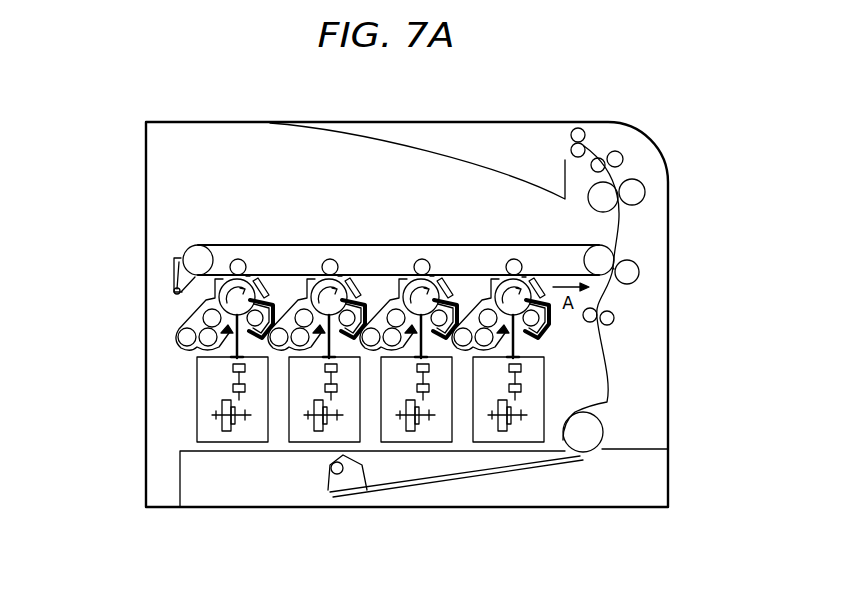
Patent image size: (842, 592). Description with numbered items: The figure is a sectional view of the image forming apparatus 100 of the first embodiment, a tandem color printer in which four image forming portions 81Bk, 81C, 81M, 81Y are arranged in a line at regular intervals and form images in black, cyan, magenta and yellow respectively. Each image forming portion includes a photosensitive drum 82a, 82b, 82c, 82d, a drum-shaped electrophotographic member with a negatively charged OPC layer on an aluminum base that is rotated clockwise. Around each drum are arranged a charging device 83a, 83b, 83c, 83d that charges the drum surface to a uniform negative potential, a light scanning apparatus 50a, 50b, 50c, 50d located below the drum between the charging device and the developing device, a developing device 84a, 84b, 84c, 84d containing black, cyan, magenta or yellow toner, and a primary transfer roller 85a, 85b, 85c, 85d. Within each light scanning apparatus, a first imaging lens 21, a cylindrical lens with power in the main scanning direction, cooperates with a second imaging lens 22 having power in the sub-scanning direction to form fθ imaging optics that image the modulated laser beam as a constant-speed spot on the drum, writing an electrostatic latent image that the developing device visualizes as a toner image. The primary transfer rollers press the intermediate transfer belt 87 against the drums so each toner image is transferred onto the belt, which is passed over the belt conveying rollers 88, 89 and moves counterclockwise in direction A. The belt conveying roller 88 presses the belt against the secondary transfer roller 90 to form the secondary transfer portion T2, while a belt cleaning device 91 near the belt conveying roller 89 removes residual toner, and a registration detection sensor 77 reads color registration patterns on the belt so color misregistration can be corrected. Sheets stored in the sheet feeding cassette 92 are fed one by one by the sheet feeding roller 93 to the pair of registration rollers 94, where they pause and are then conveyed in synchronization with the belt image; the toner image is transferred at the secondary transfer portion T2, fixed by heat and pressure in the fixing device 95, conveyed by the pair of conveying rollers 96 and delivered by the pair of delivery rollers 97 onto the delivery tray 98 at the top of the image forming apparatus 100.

The image forming apparatus 100 is at (146, 182).
The intermediate transfer belt 87 is at (217, 246).
The belt conveying roller 89 is at (190, 248).
The belt cleaning device 91 is at (173, 272).
The belt conveying roller 88 is at (610, 250).
The secondary transfer roller 90 is at (640, 273).
The secondary transfer portion T2 is at (658, 280).
The delivery tray 98 is at (522, 180).
The registration detection sensor 77 is at (567, 236).
The pair of delivery rollers 97 is at (577, 128).
The pair of conveying rollers 96 is at (622, 152).
The fixing device 95 is at (643, 184).
The pair of registration rollers 94 is at (612, 320).
The sheet feeding roller 93 is at (610, 406).
The sheet feeding cassette 92 is at (612, 488).
The image forming portion 81Y is at (200, 303).
The image forming portion 81M is at (307, 279).
The image forming portion 81C is at (399, 279).
The image forming portion 81Bk is at (491, 279).
The photosensitive drum 82a is at (490, 287).
The photosensitive drum 82b is at (398, 287).
The photosensitive drum 82c is at (306, 287).
The photosensitive drum 82d is at (214, 287).
The charging device 83a is at (538, 328).
The charging device 83b is at (441, 283).
The charging device 83c is at (349, 283).
The charging device 83d is at (257, 283).
The developing device 84a is at (476, 310).
The developing device 84b is at (385, 310).
The developing device 84c is at (293, 310).
The developing device 84d is at (202, 305).
The primary transfer roller 85a is at (505, 266).
The primary transfer roller 85b is at (413, 266).
The primary transfer roller 85c is at (321, 266).
The primary transfer roller 85d is at (229, 266).
The light scanning apparatus 50a is at (488, 433).
The light scanning apparatus 50b is at (396, 433).
The light scanning apparatus 50c is at (304, 433).
The light scanning apparatus 50d is at (212, 433).
The second imaging lens 22 is at (521, 367).
The first imaging lens 21 is at (521, 388).